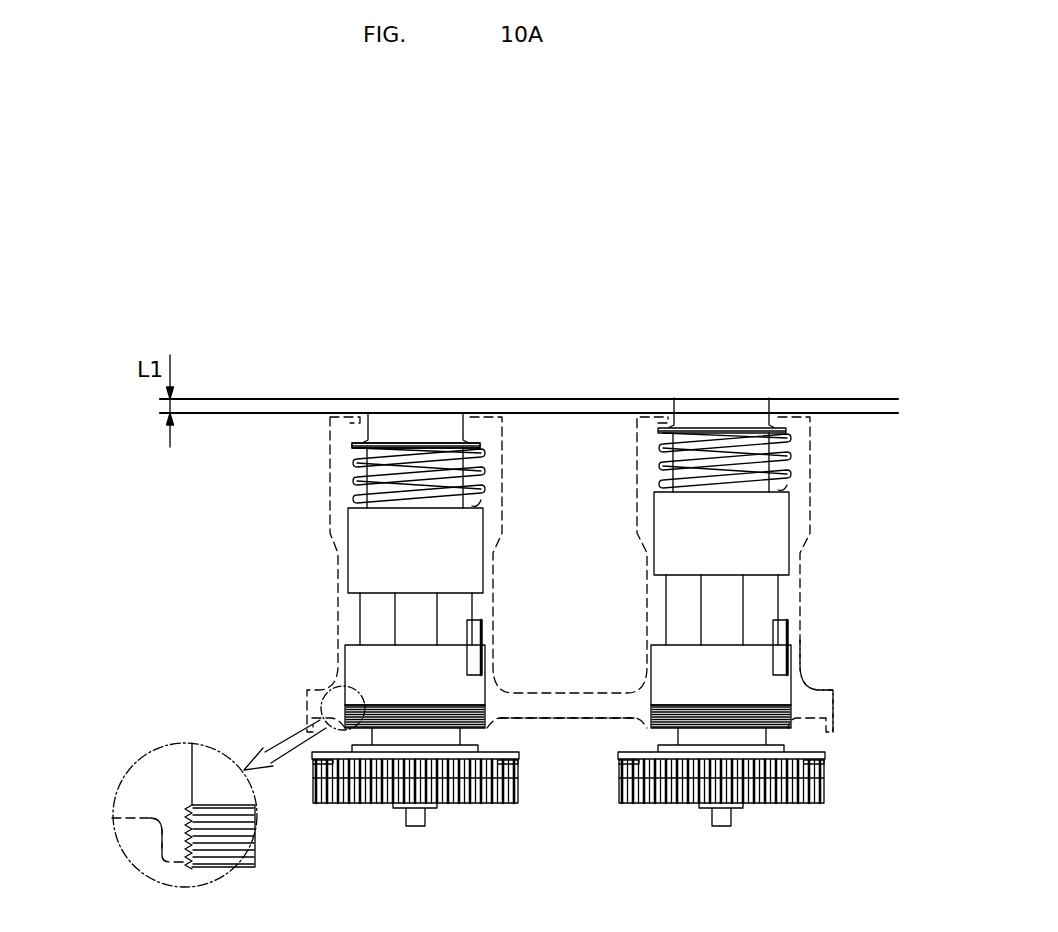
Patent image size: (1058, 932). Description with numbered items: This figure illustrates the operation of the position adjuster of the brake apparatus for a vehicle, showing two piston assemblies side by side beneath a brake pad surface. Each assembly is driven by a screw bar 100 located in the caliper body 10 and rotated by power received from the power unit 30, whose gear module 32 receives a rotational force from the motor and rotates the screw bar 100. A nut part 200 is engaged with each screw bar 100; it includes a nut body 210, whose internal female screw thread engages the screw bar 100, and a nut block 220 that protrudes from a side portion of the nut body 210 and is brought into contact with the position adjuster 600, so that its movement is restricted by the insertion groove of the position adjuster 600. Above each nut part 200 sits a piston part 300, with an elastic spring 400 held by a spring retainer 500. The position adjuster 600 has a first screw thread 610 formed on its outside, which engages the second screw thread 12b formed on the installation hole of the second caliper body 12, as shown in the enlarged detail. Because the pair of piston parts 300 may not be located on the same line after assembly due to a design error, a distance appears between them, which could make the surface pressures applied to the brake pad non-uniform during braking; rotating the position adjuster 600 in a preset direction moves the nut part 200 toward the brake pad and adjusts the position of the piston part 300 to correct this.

The piston part 300 is at (432, 430).
The spring retainer 500 is at (355, 445).
The elastic spring 400 is at (362, 484).
The nut part 200 is at (333, 591).
The nut body 210 is at (455, 605).
The nut block 220 is at (468, 633).
The position adjuster 600 is at (372, 670).
The first screw thread 610 is at (232, 838).
The screw bar 100 is at (563, 712).
The second caliper body 12 is at (148, 800).
The second screw thread 12b is at (185, 828).
The caliper body 10 is at (833, 692).
The gear module 32 is at (482, 795).
The power unit 30 is at (721, 765).